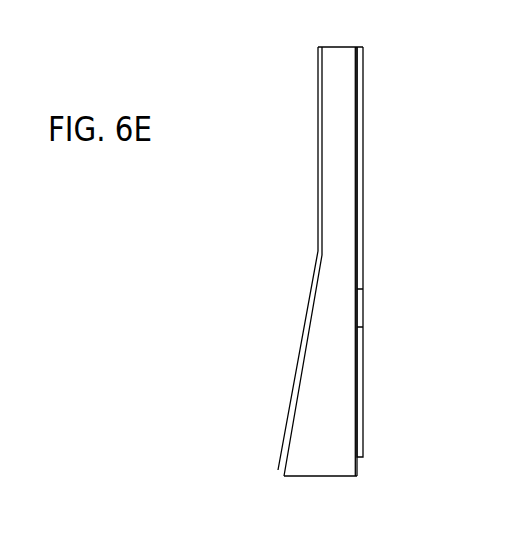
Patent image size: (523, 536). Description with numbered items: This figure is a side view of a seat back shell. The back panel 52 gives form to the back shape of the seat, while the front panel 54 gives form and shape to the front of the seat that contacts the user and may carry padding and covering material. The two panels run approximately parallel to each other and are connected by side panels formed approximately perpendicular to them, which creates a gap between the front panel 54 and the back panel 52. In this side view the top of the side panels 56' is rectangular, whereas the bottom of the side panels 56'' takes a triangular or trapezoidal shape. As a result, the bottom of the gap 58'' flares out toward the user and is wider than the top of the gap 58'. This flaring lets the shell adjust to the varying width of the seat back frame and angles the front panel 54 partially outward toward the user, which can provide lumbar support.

The back panel 52 is at (358, 113).
The front panel 54 is at (296, 372).
The top of the side panels 56' is at (293, 151).
The bottom of the side panels 56'' is at (281, 365).
The top of the gap 58' is at (315, 31).
The bottom of the gap 58'' is at (279, 477).